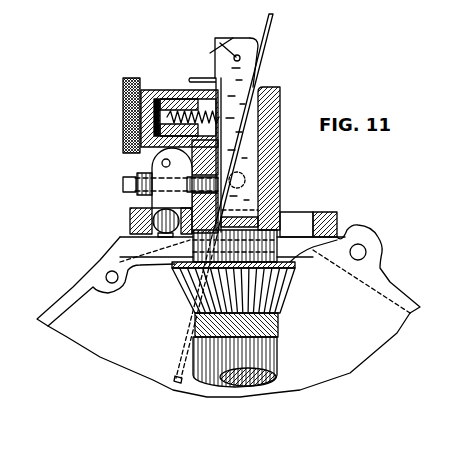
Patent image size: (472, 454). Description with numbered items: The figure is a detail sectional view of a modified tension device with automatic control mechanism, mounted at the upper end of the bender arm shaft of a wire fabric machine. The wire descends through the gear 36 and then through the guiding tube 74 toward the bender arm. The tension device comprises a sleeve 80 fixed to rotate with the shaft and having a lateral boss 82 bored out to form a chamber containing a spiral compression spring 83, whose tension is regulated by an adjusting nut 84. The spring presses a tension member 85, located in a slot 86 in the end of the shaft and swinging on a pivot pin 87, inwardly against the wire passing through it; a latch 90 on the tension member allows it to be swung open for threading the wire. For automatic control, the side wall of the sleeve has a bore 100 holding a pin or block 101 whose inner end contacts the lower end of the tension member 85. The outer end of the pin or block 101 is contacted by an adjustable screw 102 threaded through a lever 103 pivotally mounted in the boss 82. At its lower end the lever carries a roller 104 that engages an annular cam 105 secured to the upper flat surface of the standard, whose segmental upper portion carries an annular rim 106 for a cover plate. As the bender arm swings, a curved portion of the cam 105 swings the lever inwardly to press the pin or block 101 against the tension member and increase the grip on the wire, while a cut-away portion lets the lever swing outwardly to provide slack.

The gear 36 is at (296, 298).
The guiding tube 74 is at (181, 348).
The sleeve 80 is at (277, 169).
The boss 82 is at (153, 147).
The spiral compression spring 83 is at (172, 98).
The adjusting nut 84 is at (130, 79).
The tension member 85 is at (221, 59).
The slot 86 is at (258, 42).
The pivot pin 87 is at (238, 55).
The latch 90 is at (193, 79).
The bore 100 is at (215, 174).
The pin or block 101 is at (277, 192).
The adjustable screw 102 is at (155, 215).
The lever 103 is at (157, 198).
The roller 104 is at (175, 233).
The annular cam 105 is at (338, 216).
The annular rim 106 is at (80, 290).